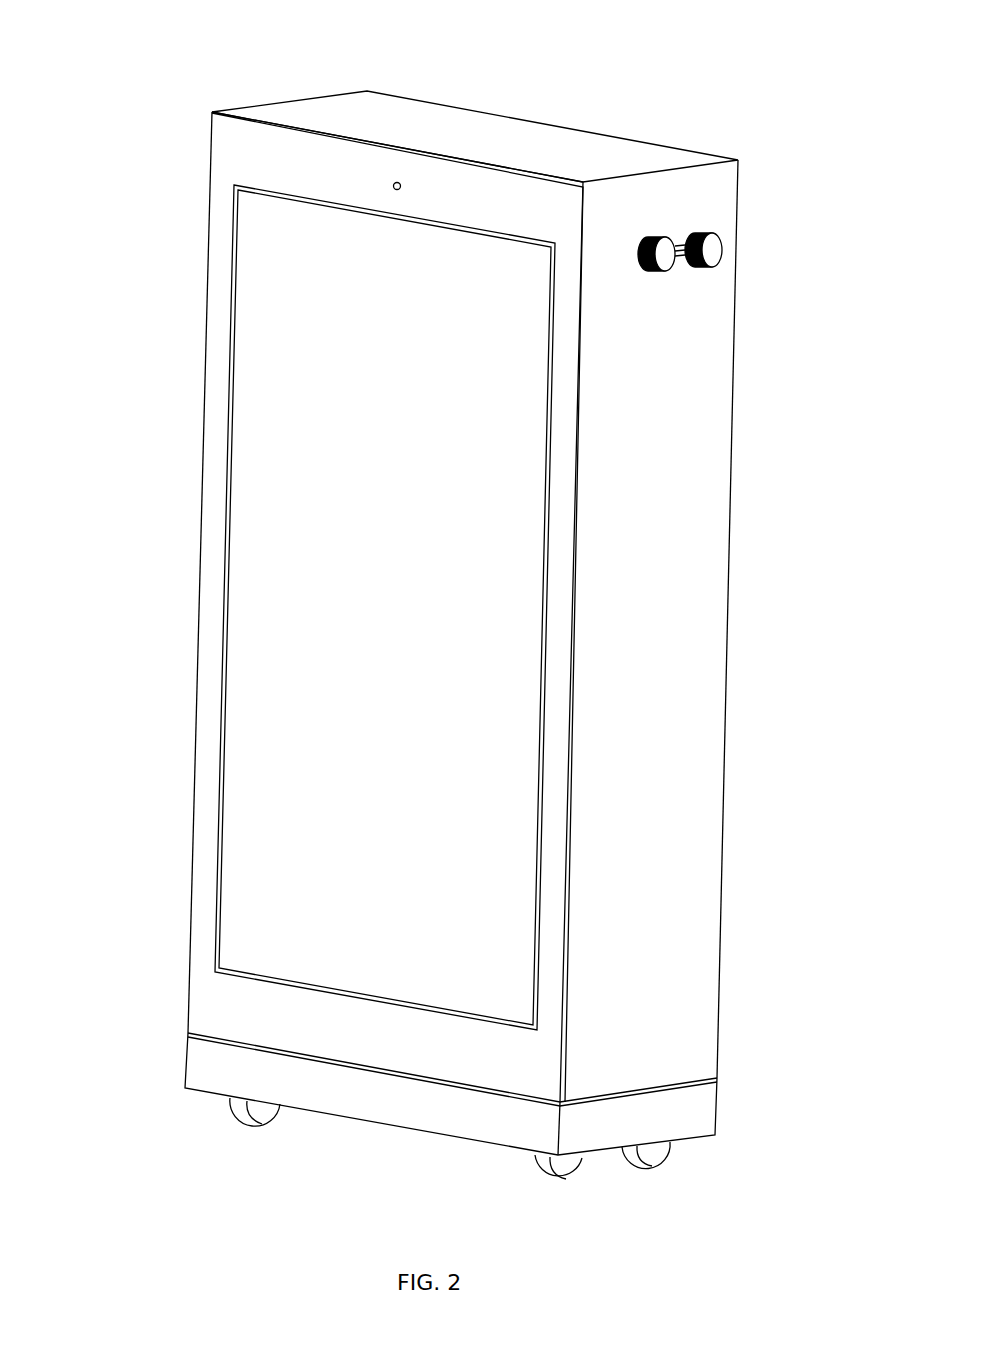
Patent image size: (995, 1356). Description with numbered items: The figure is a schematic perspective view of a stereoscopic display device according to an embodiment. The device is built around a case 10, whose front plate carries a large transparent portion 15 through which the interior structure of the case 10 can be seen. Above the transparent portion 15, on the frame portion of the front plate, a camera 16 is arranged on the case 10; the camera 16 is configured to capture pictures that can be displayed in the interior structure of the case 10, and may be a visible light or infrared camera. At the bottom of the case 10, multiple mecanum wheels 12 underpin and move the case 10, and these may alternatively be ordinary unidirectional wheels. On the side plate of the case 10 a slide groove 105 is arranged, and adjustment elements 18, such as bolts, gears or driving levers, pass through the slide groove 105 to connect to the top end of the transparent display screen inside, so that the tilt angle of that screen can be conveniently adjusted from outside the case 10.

The case 10 is at (666, 792).
The mecanum wheels 12 is at (570, 1168).
The transparent portion 15 is at (296, 442).
The camera 16 is at (394, 183).
The adjustment elements 18 is at (714, 250).
The slide groove 105 is at (682, 240).